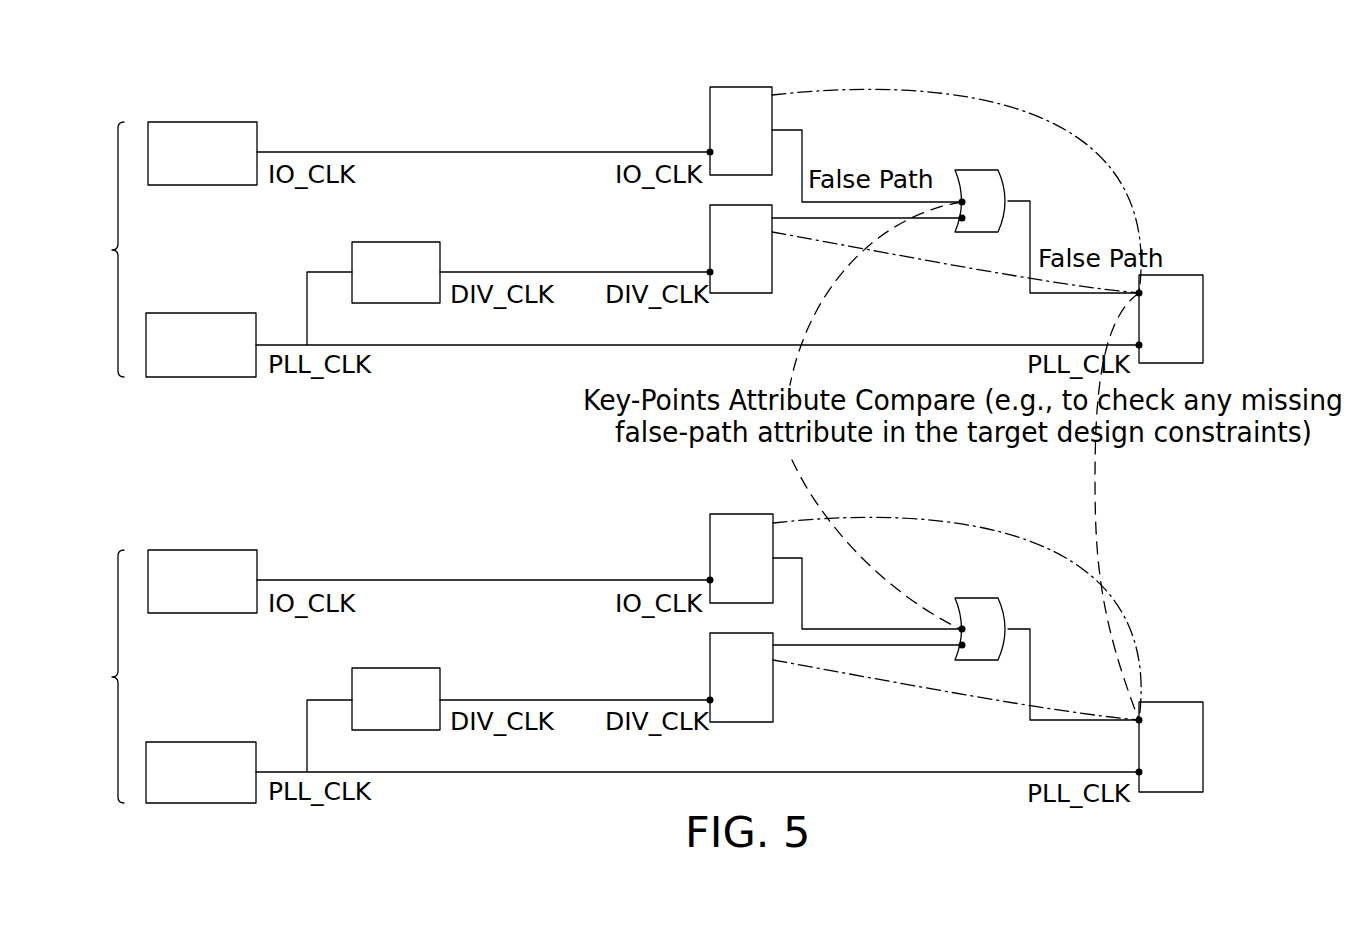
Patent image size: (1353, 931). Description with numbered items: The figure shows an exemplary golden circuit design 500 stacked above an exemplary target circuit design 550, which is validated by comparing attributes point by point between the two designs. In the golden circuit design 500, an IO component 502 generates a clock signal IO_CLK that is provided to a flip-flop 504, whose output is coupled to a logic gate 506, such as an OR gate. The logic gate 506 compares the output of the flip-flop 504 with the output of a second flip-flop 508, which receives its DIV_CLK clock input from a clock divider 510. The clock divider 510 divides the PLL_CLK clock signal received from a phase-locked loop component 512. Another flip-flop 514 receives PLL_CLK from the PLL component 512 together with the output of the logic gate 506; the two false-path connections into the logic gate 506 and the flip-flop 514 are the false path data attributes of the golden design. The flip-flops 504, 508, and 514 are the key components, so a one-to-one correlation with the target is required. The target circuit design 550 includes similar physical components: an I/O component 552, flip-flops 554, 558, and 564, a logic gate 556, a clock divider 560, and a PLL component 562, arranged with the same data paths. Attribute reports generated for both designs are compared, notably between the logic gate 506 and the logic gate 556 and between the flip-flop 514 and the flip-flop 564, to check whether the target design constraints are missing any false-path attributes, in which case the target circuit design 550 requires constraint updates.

The golden circuit design 500 is at (92, 249).
The IO component 502 is at (203, 122).
The flip-flop 504 is at (742, 87).
The logic gate 506 is at (1007, 183).
The flip-flop 508 is at (710, 257).
The clock divider 510 is at (397, 242).
The phase-locked loop component 512 is at (200, 313).
The flip-flop 514 is at (1172, 275).
The target circuit design 550 is at (92, 676).
The I/O component 552 is at (203, 550).
The flip-flop 554 is at (742, 514).
The logic gate 556 is at (1007, 610).
The flip-flop 558 is at (710, 685).
The clock divider 560 is at (397, 668).
The PLL component 562 is at (200, 742).
The flip-flop 564 is at (1172, 702).